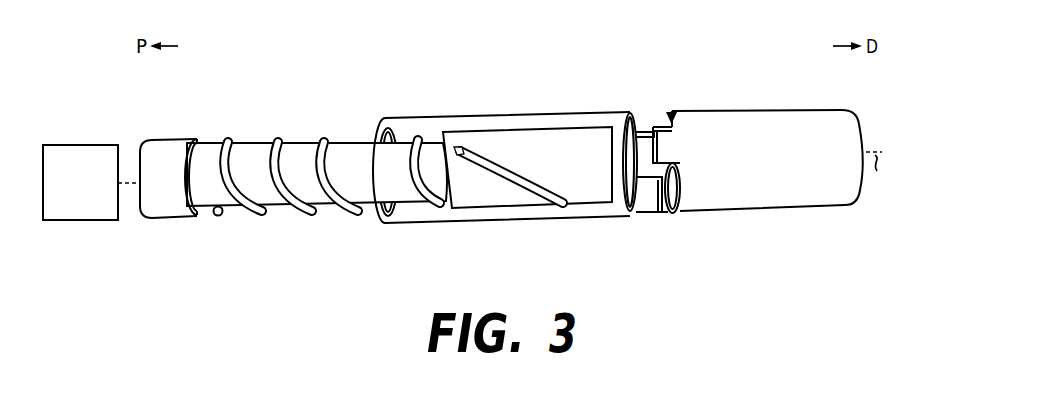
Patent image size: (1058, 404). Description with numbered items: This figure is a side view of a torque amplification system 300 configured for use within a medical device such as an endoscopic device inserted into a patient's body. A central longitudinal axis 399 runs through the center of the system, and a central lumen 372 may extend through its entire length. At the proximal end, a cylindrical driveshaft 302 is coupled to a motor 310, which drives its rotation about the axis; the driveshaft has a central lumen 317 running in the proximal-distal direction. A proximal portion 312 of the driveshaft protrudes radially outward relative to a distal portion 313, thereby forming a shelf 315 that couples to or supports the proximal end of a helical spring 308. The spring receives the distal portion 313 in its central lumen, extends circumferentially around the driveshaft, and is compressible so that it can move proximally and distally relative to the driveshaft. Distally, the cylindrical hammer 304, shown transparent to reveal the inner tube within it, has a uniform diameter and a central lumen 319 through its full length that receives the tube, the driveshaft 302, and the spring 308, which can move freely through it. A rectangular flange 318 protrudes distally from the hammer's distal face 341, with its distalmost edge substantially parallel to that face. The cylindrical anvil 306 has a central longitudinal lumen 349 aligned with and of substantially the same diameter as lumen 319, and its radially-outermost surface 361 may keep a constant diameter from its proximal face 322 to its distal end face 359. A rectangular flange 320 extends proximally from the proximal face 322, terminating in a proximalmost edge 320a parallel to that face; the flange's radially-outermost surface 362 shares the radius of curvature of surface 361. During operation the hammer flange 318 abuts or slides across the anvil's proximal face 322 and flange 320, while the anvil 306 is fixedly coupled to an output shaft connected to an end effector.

The torque amplification system 300 is at (565, 34).
The motor 310 is at (85, 145).
The proximal portion 312 is at (176, 210).
The central lumen 317 is at (135, 213).
The shelf 315 is at (200, 131).
The driveshaft 302 is at (254, 174).
The spring 308 is at (297, 214).
The distal portion 313 is at (304, 153).
The hammer 304 is at (407, 166).
The distal face 341 is at (639, 132).
The flange 318 is at (651, 130).
The flange 320 is at (673, 126).
The proximalmost edge 320a is at (644, 158).
The central lumen 319 is at (642, 210).
The proximal face 322 is at (678, 226).
The anvil 306 is at (776, 118).
The radially-outermost surface 362 is at (693, 137).
The radially-outermost surface 361 is at (803, 191).
The central lumen 372 is at (878, 115).
The distal end face 359 is at (878, 133).
The central longitudinal axis 399 is at (884, 173).
The central longitudinal lumen 349 is at (871, 204).